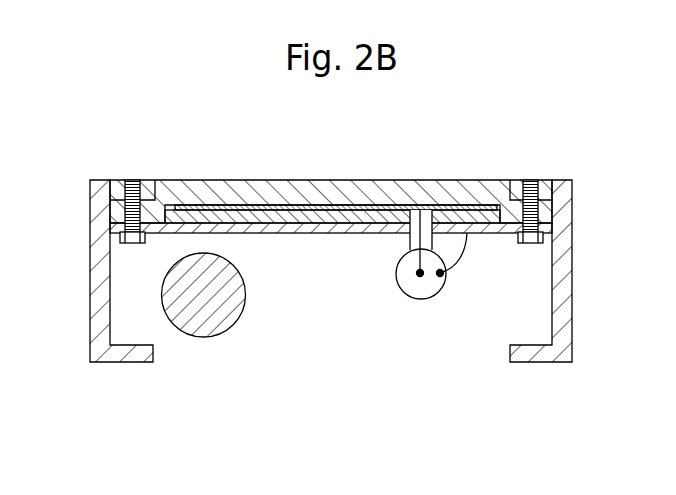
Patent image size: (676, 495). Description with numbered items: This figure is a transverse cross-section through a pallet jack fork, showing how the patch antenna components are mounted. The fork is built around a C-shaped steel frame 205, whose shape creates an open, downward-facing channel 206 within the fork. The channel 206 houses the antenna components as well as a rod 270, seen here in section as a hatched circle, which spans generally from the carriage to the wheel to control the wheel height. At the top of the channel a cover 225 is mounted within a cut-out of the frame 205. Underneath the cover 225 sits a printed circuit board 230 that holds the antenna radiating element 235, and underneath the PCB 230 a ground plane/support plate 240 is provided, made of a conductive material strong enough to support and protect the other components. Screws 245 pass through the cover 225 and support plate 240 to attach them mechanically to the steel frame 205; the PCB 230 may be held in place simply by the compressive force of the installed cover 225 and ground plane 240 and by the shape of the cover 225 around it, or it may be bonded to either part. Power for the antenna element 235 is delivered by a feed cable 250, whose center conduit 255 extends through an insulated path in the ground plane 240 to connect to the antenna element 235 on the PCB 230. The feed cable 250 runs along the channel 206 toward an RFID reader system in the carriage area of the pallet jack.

The steel frame 205 is at (113, 167).
The channel 206 is at (219, 378).
The cover 225 is at (188, 167).
The printed circuit board 230 is at (496, 199).
The antenna radiating element 235 is at (452, 196).
The ground plane/support plate 240 is at (486, 247).
The screws 245 is at (536, 180).
The feed cable 250 is at (411, 310).
The center conduit 255 is at (384, 275).
The rod 270 is at (245, 302).